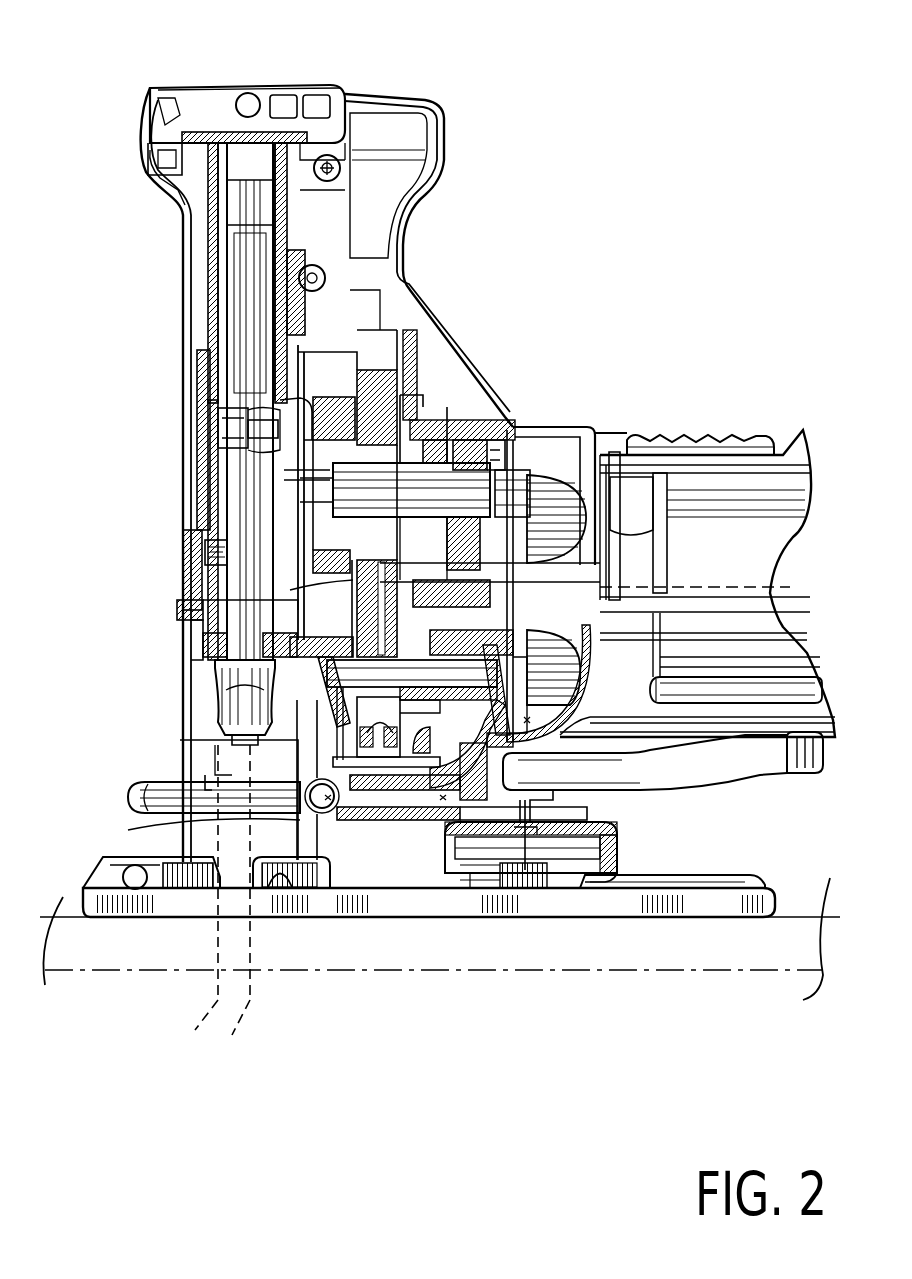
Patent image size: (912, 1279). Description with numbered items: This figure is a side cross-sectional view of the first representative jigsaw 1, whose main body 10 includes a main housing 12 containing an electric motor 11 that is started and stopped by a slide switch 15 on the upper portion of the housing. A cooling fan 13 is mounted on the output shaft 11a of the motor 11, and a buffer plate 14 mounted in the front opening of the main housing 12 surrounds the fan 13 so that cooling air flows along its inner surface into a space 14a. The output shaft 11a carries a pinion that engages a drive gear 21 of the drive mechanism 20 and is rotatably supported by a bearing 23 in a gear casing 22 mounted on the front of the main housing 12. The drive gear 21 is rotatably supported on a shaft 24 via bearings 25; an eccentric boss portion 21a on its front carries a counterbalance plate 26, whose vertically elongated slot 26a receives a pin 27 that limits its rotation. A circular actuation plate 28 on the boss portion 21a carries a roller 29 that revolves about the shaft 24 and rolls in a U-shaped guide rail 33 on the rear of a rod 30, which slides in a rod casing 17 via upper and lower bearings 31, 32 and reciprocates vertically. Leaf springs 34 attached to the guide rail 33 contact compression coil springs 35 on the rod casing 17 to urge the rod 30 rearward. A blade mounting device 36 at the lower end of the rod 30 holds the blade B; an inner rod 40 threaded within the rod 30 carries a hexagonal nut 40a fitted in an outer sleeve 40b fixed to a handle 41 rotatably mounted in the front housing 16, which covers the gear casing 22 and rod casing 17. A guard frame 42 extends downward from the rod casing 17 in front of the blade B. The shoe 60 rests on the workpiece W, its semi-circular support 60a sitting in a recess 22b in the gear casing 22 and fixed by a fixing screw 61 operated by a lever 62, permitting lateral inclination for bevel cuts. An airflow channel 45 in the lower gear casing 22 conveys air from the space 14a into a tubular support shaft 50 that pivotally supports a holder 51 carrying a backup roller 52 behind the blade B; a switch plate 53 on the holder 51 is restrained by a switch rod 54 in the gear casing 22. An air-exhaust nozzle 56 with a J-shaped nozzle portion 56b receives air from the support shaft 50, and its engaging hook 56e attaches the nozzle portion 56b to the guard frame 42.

The jigsaw 1 is at (648, 328).
The main body 10 is at (738, 428).
The electric motor 11 is at (760, 513).
The output shaft 11a is at (672, 770).
The main housing 12 is at (572, 450).
The cooling fan 13 is at (553, 437).
The buffer plate 14 is at (680, 906).
The space 14a is at (610, 882).
The slide switch 15 is at (660, 470).
The front housing 16 is at (442, 115).
The rod casing 17 is at (185, 632).
The drive mechanism 20 is at (176, 378).
The drive gear 21 is at (458, 430).
The eccentric boss portion 21a is at (340, 594).
The gear casing 22 is at (420, 395).
The recess 22b is at (412, 760).
The bearing 23 is at (522, 455).
The shaft 24 is at (330, 494).
The bearings 25 is at (440, 425).
The counterbalance plate 26 is at (362, 385).
The slot 26a is at (370, 800).
The pin 27 is at (440, 845).
The actuation plate 28 is at (245, 215).
The roller 29 is at (290, 470).
The rod 30 is at (266, 292).
The upper bearing 31 is at (203, 345).
The lower bearing 32 is at (200, 652).
The guide rail 33 is at (232, 420).
The leaf springs 34 is at (215, 527).
The compression coil springs 35 is at (215, 560).
The blade mounting device 36 is at (215, 700).
The inner rod 40 is at (178, 160).
The hexagonal nut 40a is at (160, 100).
The outer sleeve 40b is at (300, 235).
The handle 41 is at (245, 92).
The guard frame 42 is at (180, 738).
The airflow channel 45 is at (505, 858).
The support shaft 50 is at (318, 882).
The holder 51 is at (303, 898).
The backup roller 52 is at (172, 857).
The switch plate 53 is at (338, 878).
The switch rod 54 is at (560, 876).
The air-exhaust nozzle 56 is at (126, 795).
The nozzle portion 56b is at (207, 785).
The engaging hook 56e is at (190, 820).
The shoe 60 is at (740, 872).
The support 60a is at (640, 892).
The fixing screw 61 is at (535, 866).
The lever 62 is at (795, 777).
The blade B is at (215, 1003).
The workpiece W is at (783, 940).